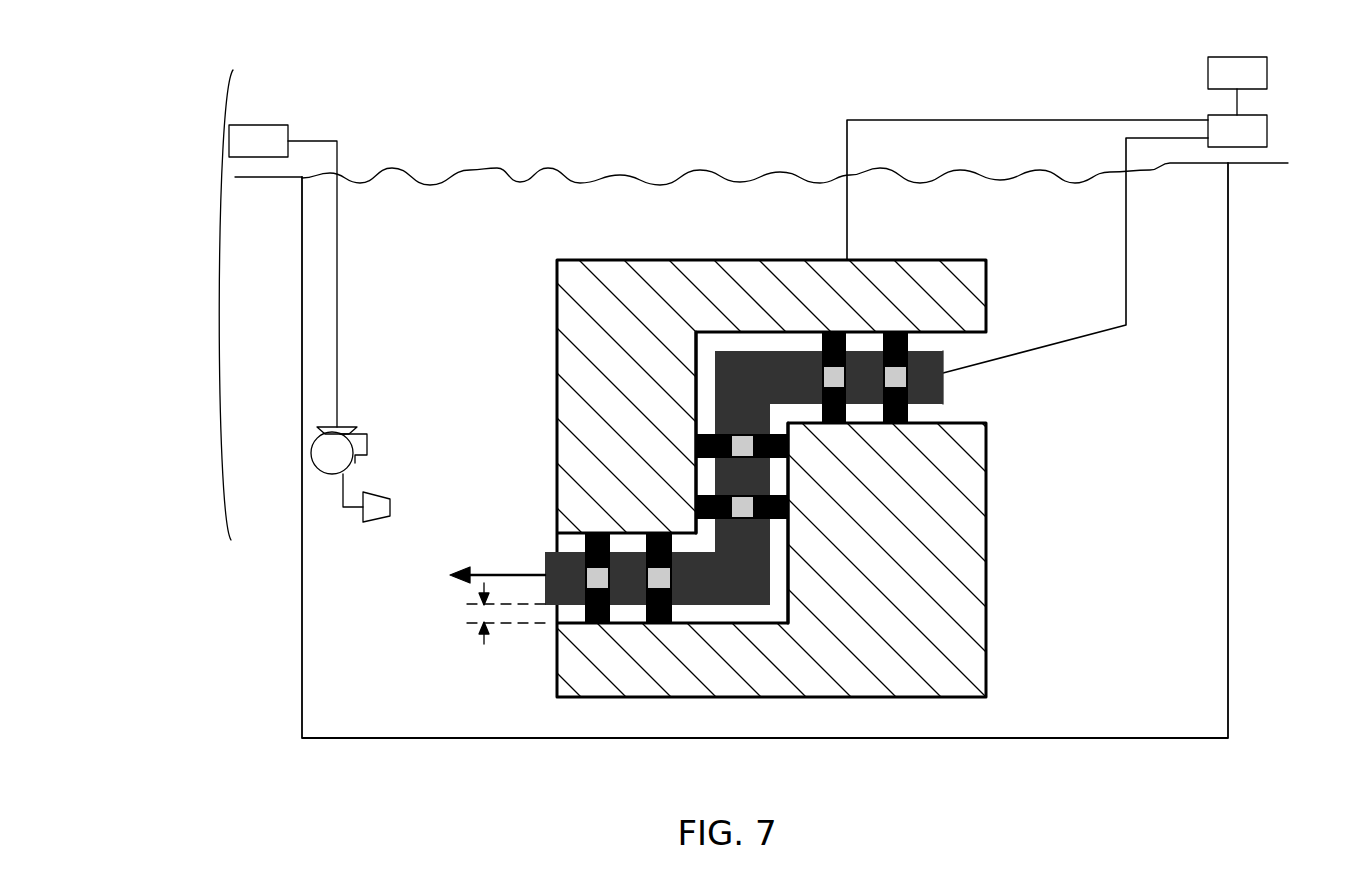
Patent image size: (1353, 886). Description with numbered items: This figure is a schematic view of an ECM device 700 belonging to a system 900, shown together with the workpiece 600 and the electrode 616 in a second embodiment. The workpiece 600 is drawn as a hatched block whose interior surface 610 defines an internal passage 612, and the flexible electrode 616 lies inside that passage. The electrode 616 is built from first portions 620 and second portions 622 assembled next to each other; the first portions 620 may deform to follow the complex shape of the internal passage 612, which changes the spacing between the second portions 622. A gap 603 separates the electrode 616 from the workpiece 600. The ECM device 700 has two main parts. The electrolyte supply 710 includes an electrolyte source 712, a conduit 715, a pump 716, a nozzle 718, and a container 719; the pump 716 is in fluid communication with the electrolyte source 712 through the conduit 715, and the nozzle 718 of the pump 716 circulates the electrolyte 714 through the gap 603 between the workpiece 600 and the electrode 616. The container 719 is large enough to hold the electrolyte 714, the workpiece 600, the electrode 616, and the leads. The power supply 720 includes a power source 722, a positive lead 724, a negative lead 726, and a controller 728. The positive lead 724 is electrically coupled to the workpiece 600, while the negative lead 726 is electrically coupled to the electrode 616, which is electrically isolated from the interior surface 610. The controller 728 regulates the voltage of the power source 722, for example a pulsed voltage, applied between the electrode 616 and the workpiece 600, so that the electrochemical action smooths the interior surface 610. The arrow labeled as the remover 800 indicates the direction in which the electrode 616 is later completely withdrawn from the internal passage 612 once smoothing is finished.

The system 900 is at (833, 38).
The ECM device 700 is at (748, 101).
The workpiece 600 is at (933, 260).
The interior surface 610 is at (605, 532).
The internal passage 612 is at (952, 412).
The electrode 616 is at (943, 360).
The first portions 620 is at (627, 605).
The second portions 622 is at (600, 607).
The gap 603 is at (473, 617).
The remover 800 is at (470, 571).
The electrolyte supply 710 is at (218, 307).
The electrolyte source 712 is at (272, 125).
The conduit 715 is at (337, 272).
The pump 716 is at (303, 462).
The nozzle 718 is at (368, 522).
The container 719 is at (1228, 240).
The electrolyte 714 is at (1200, 414).
The power supply 720 is at (1023, 62).
The power source 722 is at (1208, 117).
The positive lead 724 is at (1022, 120).
The negative lead 726 is at (1126, 265).
The controller 728 is at (1208, 68).